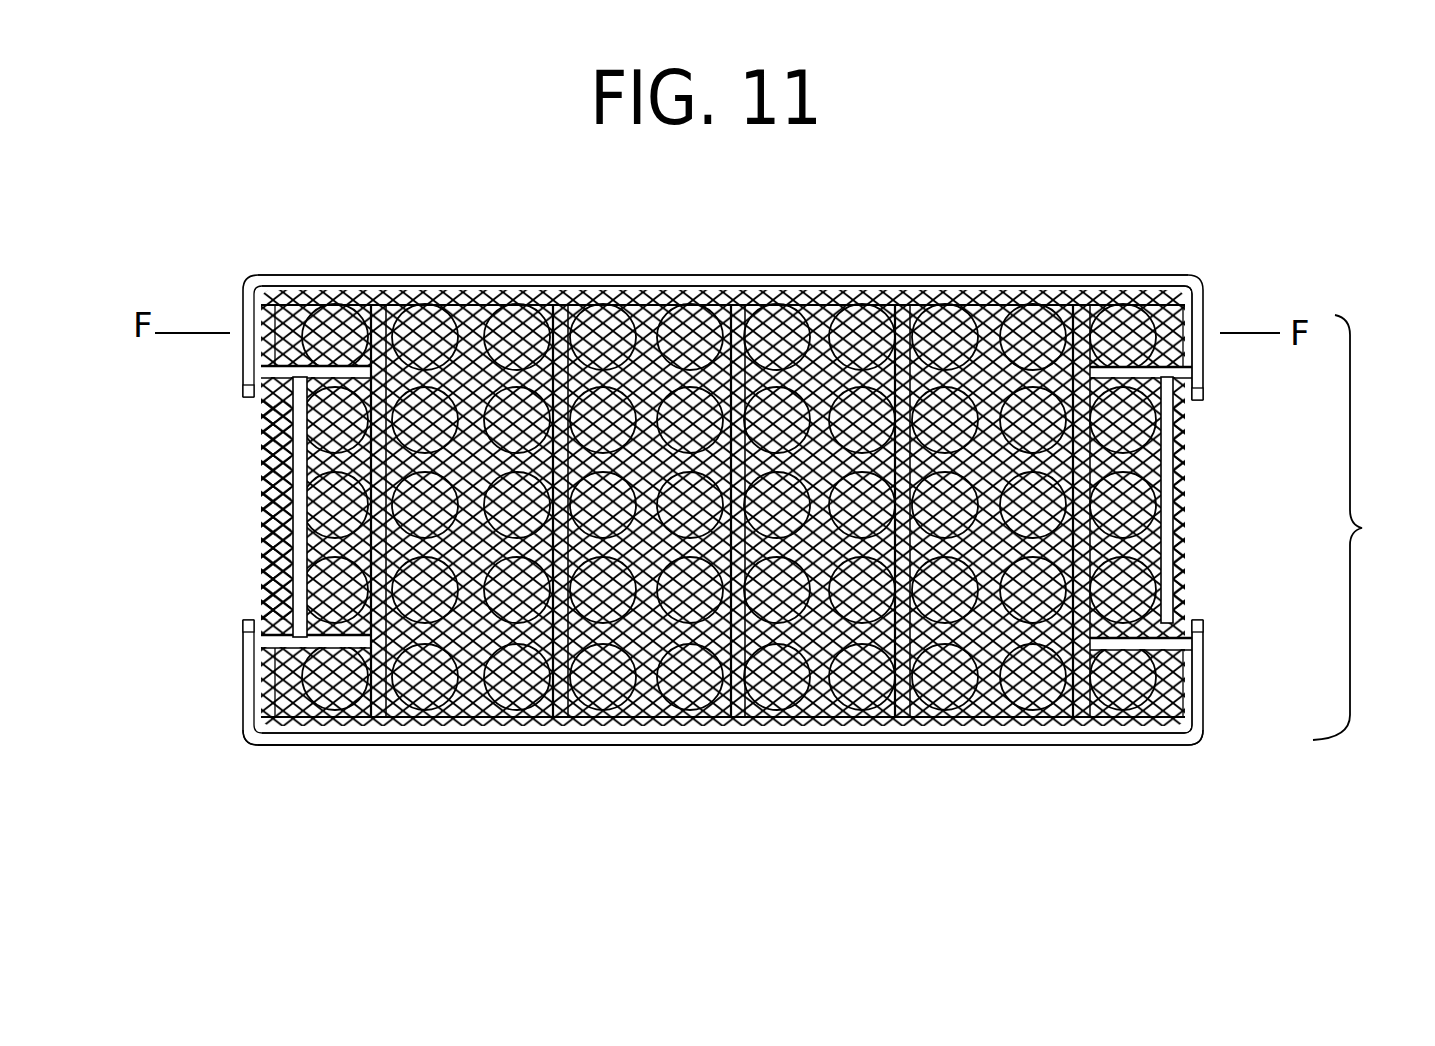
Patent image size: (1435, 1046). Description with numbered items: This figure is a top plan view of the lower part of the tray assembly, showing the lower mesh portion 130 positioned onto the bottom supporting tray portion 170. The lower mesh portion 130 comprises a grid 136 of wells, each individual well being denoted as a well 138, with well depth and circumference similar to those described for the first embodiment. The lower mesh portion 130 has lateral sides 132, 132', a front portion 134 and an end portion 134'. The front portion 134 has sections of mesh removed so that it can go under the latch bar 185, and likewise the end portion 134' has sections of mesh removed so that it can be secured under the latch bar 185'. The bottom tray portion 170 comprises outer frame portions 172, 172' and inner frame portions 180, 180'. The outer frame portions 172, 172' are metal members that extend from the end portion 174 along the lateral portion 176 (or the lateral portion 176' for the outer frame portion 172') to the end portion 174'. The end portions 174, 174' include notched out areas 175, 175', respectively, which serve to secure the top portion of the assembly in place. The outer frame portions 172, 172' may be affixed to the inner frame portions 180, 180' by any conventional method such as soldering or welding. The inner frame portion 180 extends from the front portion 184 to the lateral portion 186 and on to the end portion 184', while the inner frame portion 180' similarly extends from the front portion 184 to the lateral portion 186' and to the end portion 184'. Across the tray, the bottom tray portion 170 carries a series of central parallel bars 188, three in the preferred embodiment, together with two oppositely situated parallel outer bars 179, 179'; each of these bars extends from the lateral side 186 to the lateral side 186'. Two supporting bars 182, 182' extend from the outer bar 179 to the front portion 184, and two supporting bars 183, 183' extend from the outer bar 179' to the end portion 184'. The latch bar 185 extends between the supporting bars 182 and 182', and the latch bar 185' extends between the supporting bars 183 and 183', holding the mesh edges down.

The lower mesh portion 130 is at (1180, 746).
The lateral side 132 is at (723, 778).
The lateral side 132' is at (723, 253).
The front portion 134 is at (211, 510).
The end portion 134' is at (1228, 510).
The grid 136 is at (1373, 527).
The well 138 is at (940, 690).
The bottom supporting tray portion 170 is at (1045, 270).
The outer frame portion 172 is at (481, 787).
The outer frame portion 172' is at (942, 250).
The end portion 174 is at (665, 510).
The end portion 174' is at (1202, 468).
The notched out area 175 is at (201, 508).
The notched out area 175' is at (1242, 501).
The lateral portion 176 is at (723, 732).
The lateral portion 176' is at (944, 222).
The outer bar 179 is at (479, 766).
The outer bar 179' is at (944, 793).
The inner frame portion 180 is at (479, 770).
The inner frame portion 180' is at (479, 255).
The supporting bar 182 is at (247, 760).
The supporting bar 182' is at (249, 507).
The supporting bar 183 is at (1232, 683).
The supporting bar 183' is at (1149, 284).
The front portion 184 is at (209, 518).
The end portion 184' is at (1238, 484).
The latch bar 185 is at (235, 510).
The latch bar 185' is at (1222, 500).
The lateral portion 186 is at (942, 762).
The lateral portion 186' is at (506, 255).
The central parallel bar 188 is at (565, 292).